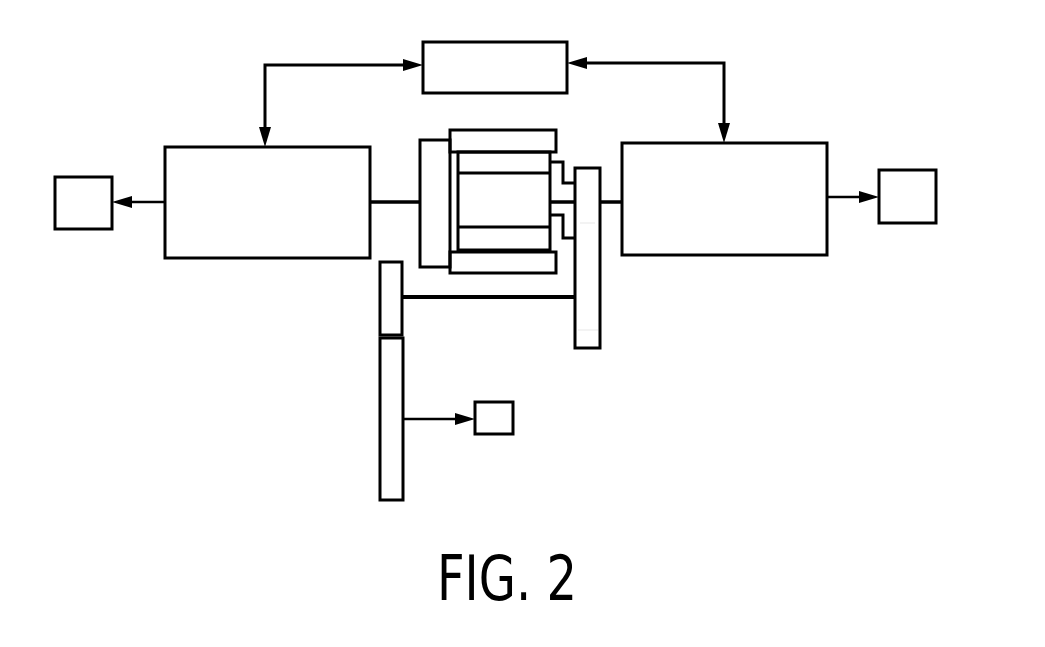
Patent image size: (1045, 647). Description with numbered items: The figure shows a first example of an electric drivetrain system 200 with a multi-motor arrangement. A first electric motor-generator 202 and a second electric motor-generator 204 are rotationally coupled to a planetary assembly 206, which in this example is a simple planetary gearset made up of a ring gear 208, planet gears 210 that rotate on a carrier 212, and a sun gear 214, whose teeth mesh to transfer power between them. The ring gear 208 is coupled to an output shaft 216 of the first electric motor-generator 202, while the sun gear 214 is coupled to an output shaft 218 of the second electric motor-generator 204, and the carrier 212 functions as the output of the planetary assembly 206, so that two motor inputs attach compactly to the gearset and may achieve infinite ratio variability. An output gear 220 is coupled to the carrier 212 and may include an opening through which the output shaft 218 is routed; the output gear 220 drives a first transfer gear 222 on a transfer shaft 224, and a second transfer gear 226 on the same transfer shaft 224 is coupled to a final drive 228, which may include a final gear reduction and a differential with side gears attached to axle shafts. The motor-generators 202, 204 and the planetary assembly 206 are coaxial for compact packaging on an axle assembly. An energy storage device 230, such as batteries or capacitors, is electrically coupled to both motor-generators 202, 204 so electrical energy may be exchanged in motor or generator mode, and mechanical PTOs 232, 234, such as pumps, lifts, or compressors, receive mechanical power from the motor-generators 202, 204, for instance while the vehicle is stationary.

The electric drivetrain system 200 is at (86, 39).
The first electric motor-generator 202 is at (175, 148).
The second electric motor-generator 204 is at (630, 144).
The planetary assembly 206 is at (436, 108).
The ring gear 208 is at (462, 131).
The planet gears 210 is at (533, 162).
The carrier 212 is at (565, 172).
The sun gear 214 is at (520, 209).
The output shaft 216 is at (392, 200).
The output shaft 218 is at (613, 207).
The output gear 220 is at (583, 223).
The first transfer gear 222 is at (590, 337).
The transfer shaft 224 is at (455, 299).
The second transfer gear 226 is at (403, 302).
The final drive 228 is at (345, 416).
The energy storage device 230 is at (435, 42).
The mechanical PTO 232 is at (81, 177).
The mechanical PTO 234 is at (908, 170).